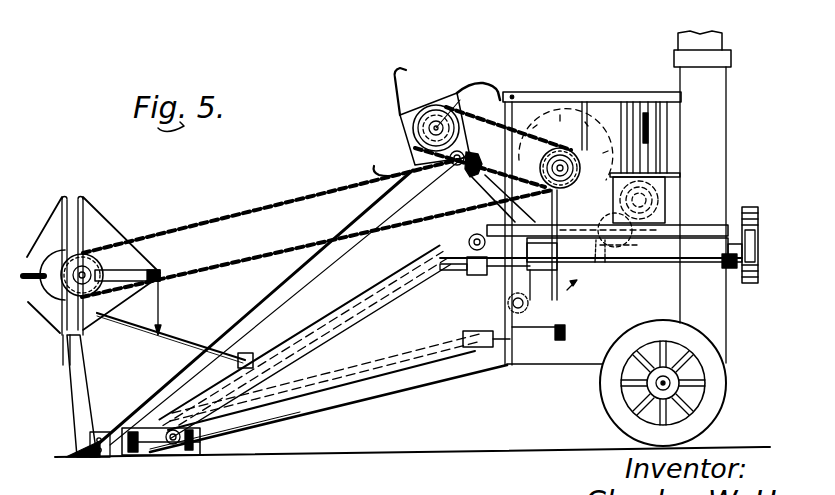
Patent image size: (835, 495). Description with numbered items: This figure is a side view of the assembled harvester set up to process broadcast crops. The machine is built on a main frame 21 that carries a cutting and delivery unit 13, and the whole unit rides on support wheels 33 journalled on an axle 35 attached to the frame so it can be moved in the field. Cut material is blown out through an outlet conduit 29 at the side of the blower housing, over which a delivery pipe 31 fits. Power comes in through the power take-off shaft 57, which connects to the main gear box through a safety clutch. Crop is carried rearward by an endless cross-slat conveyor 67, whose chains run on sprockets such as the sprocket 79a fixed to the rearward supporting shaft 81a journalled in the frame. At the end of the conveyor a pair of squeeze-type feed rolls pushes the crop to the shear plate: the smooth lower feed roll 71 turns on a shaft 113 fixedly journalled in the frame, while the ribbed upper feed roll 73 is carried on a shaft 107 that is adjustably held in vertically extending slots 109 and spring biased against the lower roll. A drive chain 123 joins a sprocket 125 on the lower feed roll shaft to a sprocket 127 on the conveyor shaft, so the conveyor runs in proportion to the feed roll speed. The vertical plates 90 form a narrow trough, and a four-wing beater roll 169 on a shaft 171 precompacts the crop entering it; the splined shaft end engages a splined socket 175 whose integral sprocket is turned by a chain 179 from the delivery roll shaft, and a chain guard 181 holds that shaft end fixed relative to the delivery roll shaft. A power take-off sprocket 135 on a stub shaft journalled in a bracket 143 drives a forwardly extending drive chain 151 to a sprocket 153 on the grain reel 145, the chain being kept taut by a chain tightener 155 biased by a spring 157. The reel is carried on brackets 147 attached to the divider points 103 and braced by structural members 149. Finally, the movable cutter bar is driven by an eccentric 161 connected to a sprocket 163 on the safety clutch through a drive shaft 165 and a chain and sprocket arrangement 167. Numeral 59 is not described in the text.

The cutting and delivery unit 13 is at (727, 128).
The main frame 21 is at (351, 318).
The outlet conduit 29 is at (717, 81).
The delivery pipe 31 is at (717, 42).
The support wheels 33 is at (716, 400).
The axle 35 is at (672, 383).
The power take-off shaft 57 is at (455, 275).
The hand wheel 59 is at (737, 226).
The endless cross-slat conveyor 67 is at (313, 320).
The lower feed roll 71 is at (666, 263).
The upper feed roll 73 is at (666, 174).
The sprocket 79a is at (595, 264).
The rearward supporting shaft 81a is at (606, 264).
The vertical plates 90 is at (534, 110).
The divider point 103 is at (81, 462).
The upper feed roll shaft 107 is at (666, 202).
The vertically extending slots 109 is at (640, 158).
The lower feed roll shaft 113 is at (671, 269).
The drive chain 123 is at (622, 257).
The sprocket 125 is at (641, 262).
The sprocket 127 is at (588, 268).
The power take-off sprocket 135 is at (585, 130).
The bracket 143 is at (579, 132).
The grain reel 145 is at (113, 214).
The brackets 147 is at (100, 372).
The structural members 149 is at (178, 336).
The forwardly extending drive chain 151 is at (299, 206).
The sprocket 153 is at (104, 257).
The chain tightener 155 is at (461, 172).
The spring 157 is at (448, 238).
The eccentric 161 is at (166, 457).
The sprocket 163 is at (506, 300).
The drive shaft 165 is at (393, 378).
The chain and sprocket arrangement 167 is at (566, 326).
The beater roll 169 is at (434, 92).
The beater roll shaft 171 is at (412, 137).
The splined socket 175 is at (443, 116).
The chain 179 is at (488, 96).
The chain guard 181 is at (468, 178).